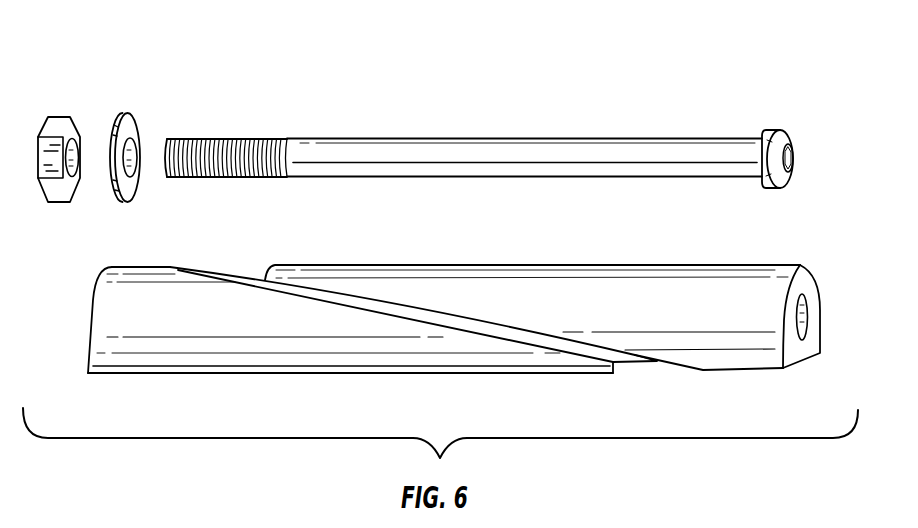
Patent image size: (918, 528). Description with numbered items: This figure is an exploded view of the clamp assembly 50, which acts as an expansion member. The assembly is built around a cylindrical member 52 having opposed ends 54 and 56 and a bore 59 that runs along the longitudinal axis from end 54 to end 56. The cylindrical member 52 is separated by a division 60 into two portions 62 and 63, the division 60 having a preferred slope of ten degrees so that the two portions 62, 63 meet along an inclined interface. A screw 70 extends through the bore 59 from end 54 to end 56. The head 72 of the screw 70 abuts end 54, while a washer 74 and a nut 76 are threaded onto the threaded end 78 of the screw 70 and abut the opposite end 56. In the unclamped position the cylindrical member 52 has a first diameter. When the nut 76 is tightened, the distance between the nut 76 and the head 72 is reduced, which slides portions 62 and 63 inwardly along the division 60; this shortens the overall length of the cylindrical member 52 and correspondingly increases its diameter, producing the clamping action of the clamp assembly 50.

The clamp assembly 50 is at (299, 53).
The cylindrical member 52 is at (433, 376).
The end 54 is at (803, 280).
The end 56 is at (93, 296).
The bore 59 is at (810, 320).
The division 60 is at (312, 292).
The portion 62 is at (473, 285).
The portion 63 is at (377, 360).
The screw 70 is at (358, 148).
The head 72 is at (773, 137).
The washer 74 is at (122, 113).
The nut 76 is at (57, 115).
The threaded end 78 is at (180, 141).